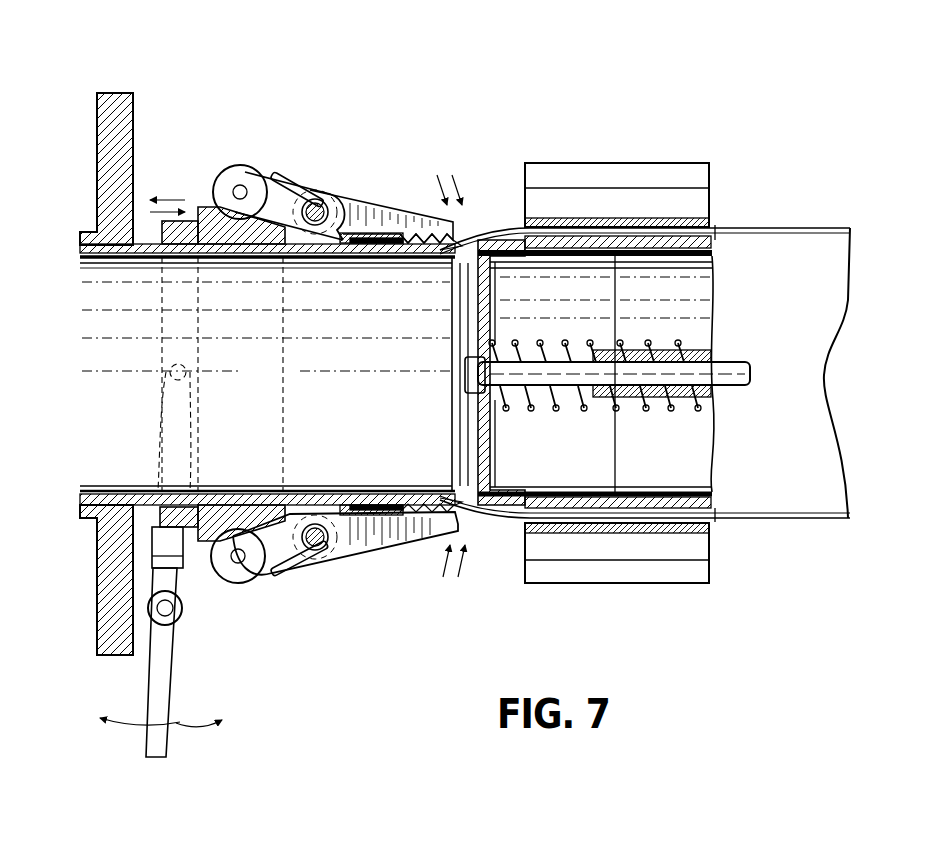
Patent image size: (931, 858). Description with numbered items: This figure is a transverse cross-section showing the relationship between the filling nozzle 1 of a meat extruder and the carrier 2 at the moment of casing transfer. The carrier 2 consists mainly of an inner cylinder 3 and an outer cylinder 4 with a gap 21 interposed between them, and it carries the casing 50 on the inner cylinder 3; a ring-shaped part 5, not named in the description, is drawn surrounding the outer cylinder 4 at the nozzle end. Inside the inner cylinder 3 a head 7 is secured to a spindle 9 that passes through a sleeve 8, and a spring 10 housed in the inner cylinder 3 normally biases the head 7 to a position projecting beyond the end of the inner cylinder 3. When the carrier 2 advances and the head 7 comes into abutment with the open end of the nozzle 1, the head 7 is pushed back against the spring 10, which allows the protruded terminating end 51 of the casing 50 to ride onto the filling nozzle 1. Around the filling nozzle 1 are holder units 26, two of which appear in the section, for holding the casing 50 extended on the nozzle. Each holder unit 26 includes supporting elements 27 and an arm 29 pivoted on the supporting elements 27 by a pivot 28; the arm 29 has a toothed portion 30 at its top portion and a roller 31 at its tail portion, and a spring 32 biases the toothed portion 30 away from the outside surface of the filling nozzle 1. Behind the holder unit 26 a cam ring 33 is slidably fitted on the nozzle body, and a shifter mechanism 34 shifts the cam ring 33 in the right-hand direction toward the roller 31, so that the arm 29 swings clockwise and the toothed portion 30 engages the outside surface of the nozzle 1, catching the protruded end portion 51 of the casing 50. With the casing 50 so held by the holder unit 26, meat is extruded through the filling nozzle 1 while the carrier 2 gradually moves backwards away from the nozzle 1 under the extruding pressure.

The filling nozzle 1 is at (384, 518).
The carrier 2 is at (516, 537).
The inner cylinder 3 is at (710, 252).
The outer cylinder 4 is at (702, 226).
The clamping ring 5 is at (690, 172).
The head 7 is at (466, 332).
The sleeve 8 is at (670, 348).
The spindle 9 is at (558, 368).
The spring 10 is at (570, 348).
The gap 21 is at (710, 231).
The holder unit 26 is at (330, 190).
The supporting elements 27 is at (335, 246).
The pivot 28 is at (317, 198).
The arm 29 is at (392, 208).
The toothed portion 30 is at (421, 246).
The roller 31 is at (240, 165).
The spring 32 is at (278, 174).
The cam ring 33 is at (202, 208).
The shifter mechanism 34 is at (180, 545).
The casing 50 is at (800, 228).
The protruded terminating end 51 is at (452, 230).